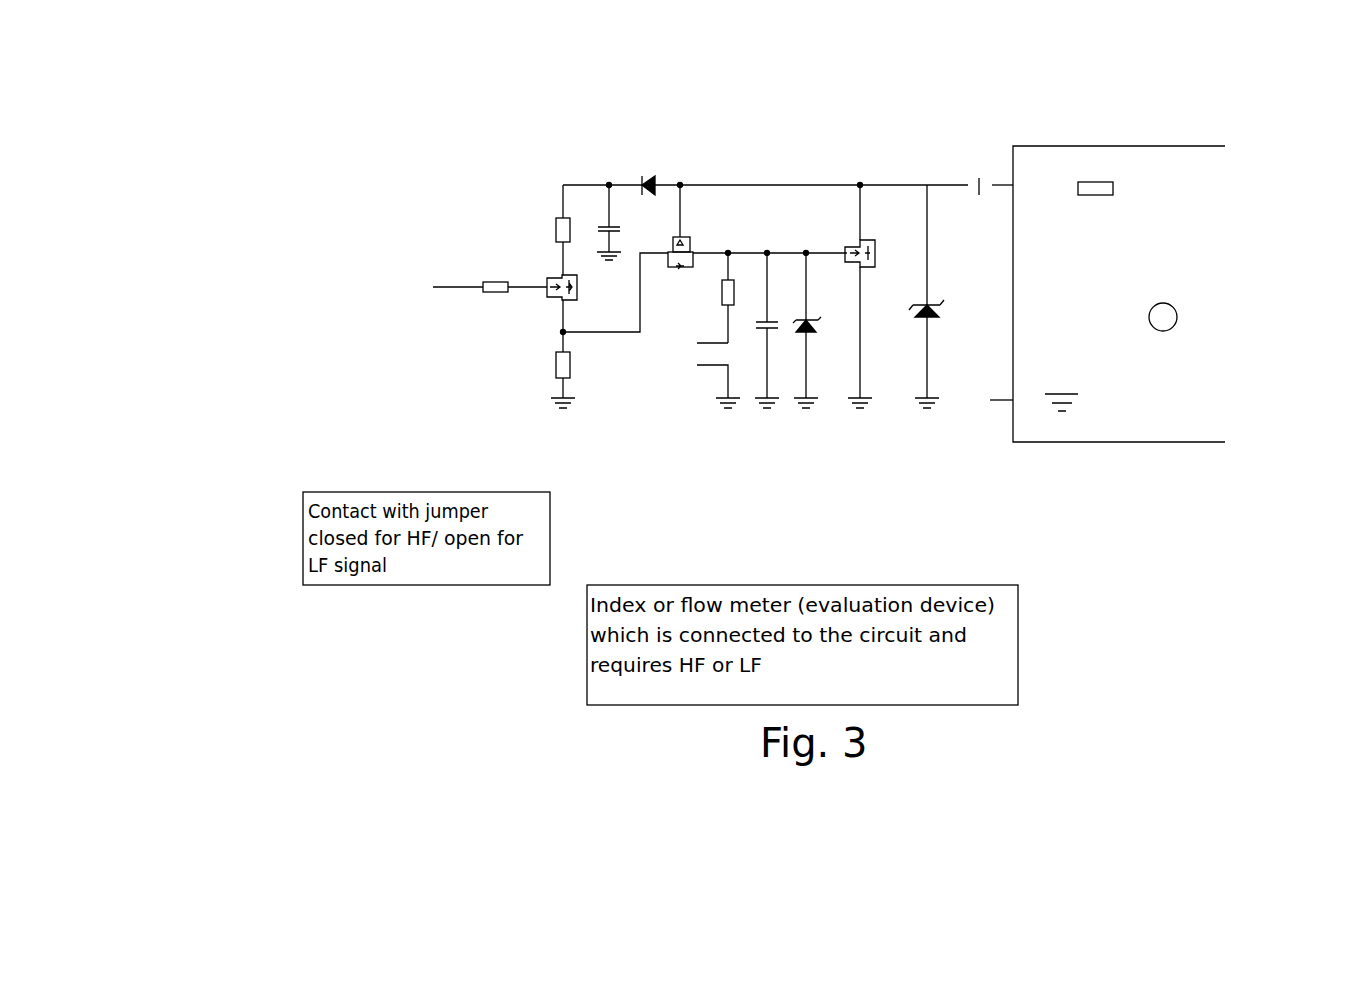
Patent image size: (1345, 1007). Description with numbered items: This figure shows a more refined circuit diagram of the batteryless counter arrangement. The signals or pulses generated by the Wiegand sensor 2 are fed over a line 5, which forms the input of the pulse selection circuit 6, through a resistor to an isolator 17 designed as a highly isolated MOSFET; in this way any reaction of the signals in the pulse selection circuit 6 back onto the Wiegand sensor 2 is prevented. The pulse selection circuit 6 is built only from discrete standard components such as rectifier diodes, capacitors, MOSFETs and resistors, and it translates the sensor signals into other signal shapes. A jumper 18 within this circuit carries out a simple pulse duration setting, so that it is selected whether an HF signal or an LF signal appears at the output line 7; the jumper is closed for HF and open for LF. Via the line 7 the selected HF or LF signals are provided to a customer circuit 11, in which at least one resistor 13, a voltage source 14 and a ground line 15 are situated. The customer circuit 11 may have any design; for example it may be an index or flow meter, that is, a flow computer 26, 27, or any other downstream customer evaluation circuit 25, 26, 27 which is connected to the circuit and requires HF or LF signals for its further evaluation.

The Wiegand sensor 2 is at (470, 287).
The line 5 is at (1237, 360).
The pulse selection circuit 6 is at (560, 146).
The line 7 is at (943, 190).
The customer circuit 11 is at (1120, 146).
The resistor 13 is at (1113, 188).
The voltage source 14 is at (1148, 316).
The ground line 15 is at (1078, 396).
The isolator 17 is at (553, 275).
The jumper 18 is at (687, 353).
The customer evaluation circuit 25 is at (1134, 547).
The flow computer 26 is at (1134, 547).
The flow computer 27 is at (1115, 478).